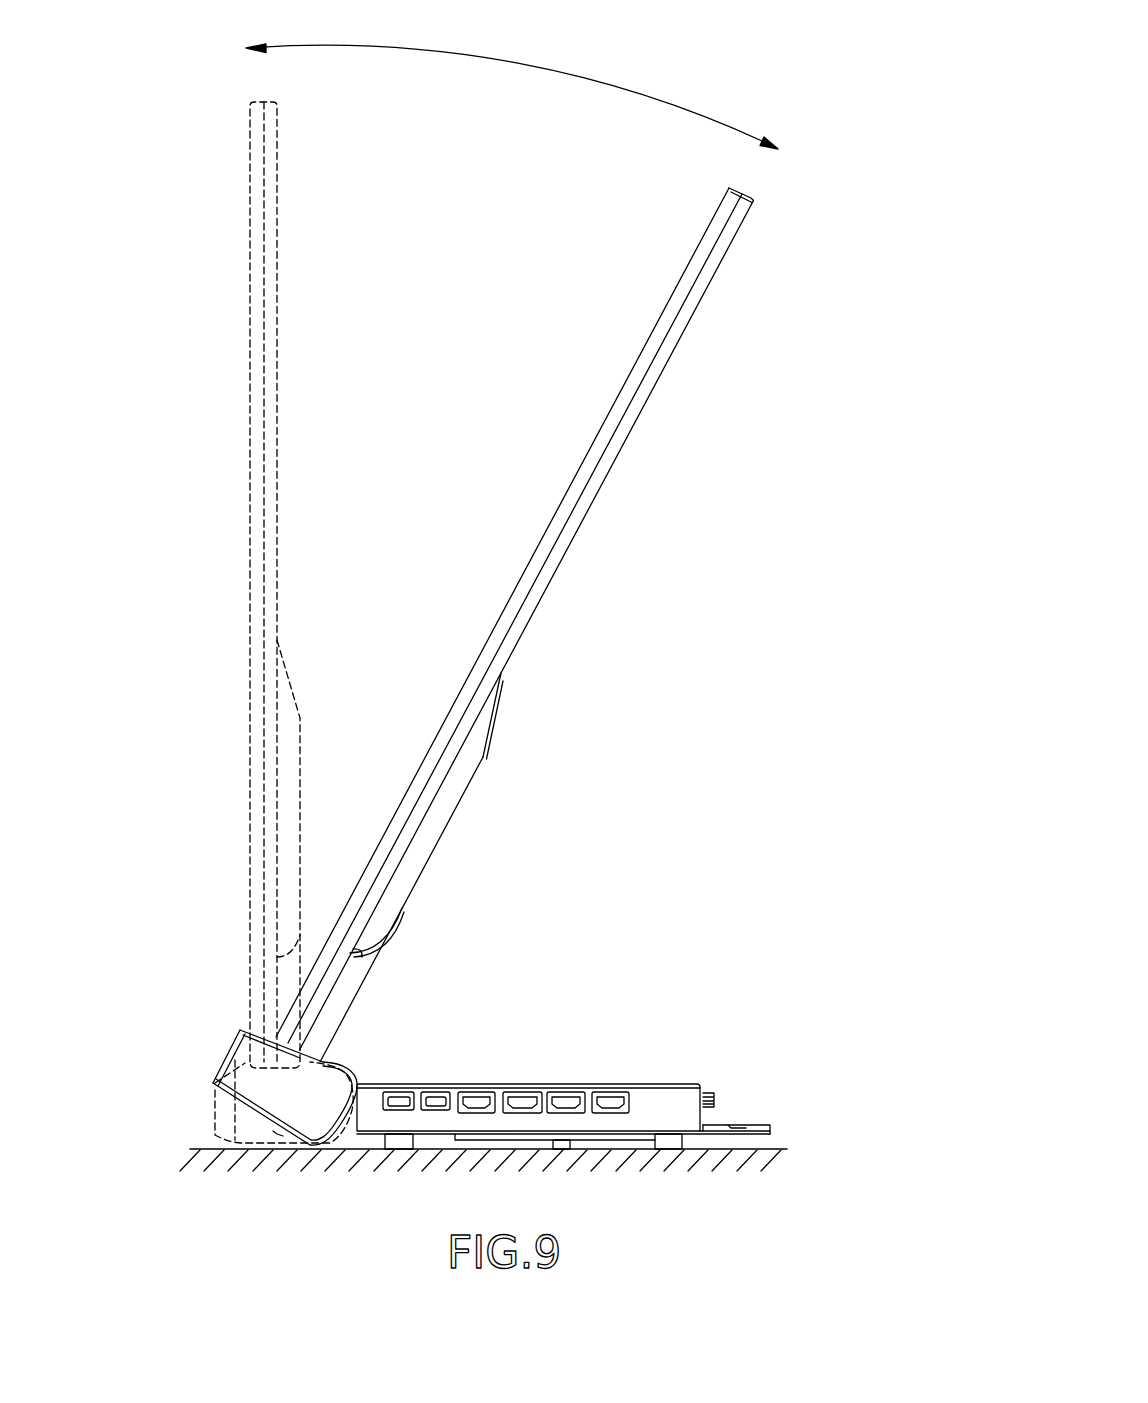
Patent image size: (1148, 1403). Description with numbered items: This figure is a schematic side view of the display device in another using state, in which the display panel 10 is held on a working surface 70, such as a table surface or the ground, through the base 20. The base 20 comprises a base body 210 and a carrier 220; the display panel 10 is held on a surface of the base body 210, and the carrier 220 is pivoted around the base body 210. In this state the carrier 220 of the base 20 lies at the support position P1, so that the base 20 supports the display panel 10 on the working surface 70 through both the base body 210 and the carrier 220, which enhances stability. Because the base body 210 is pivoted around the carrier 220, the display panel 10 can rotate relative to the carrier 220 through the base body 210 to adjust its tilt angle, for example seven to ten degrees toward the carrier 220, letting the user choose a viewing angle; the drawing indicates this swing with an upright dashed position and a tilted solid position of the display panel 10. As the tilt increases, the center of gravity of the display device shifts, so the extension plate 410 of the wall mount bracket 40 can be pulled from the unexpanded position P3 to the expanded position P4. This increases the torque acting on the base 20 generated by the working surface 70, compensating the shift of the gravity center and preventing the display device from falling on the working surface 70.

The display panel 10 is at (700, 243).
The base 20 is at (237, 1080).
The base body 210 is at (237, 1050).
The carrier 220 is at (587, 1070).
The wall mount bracket 40 is at (773, 1082).
The extension plate 410 is at (773, 1127).
The working surface 70 is at (205, 1148).
The support position P1 is at (770, 1134).
The unexpanded position P3 is at (706, 1083).
The expanded position P4 is at (770, 1126).